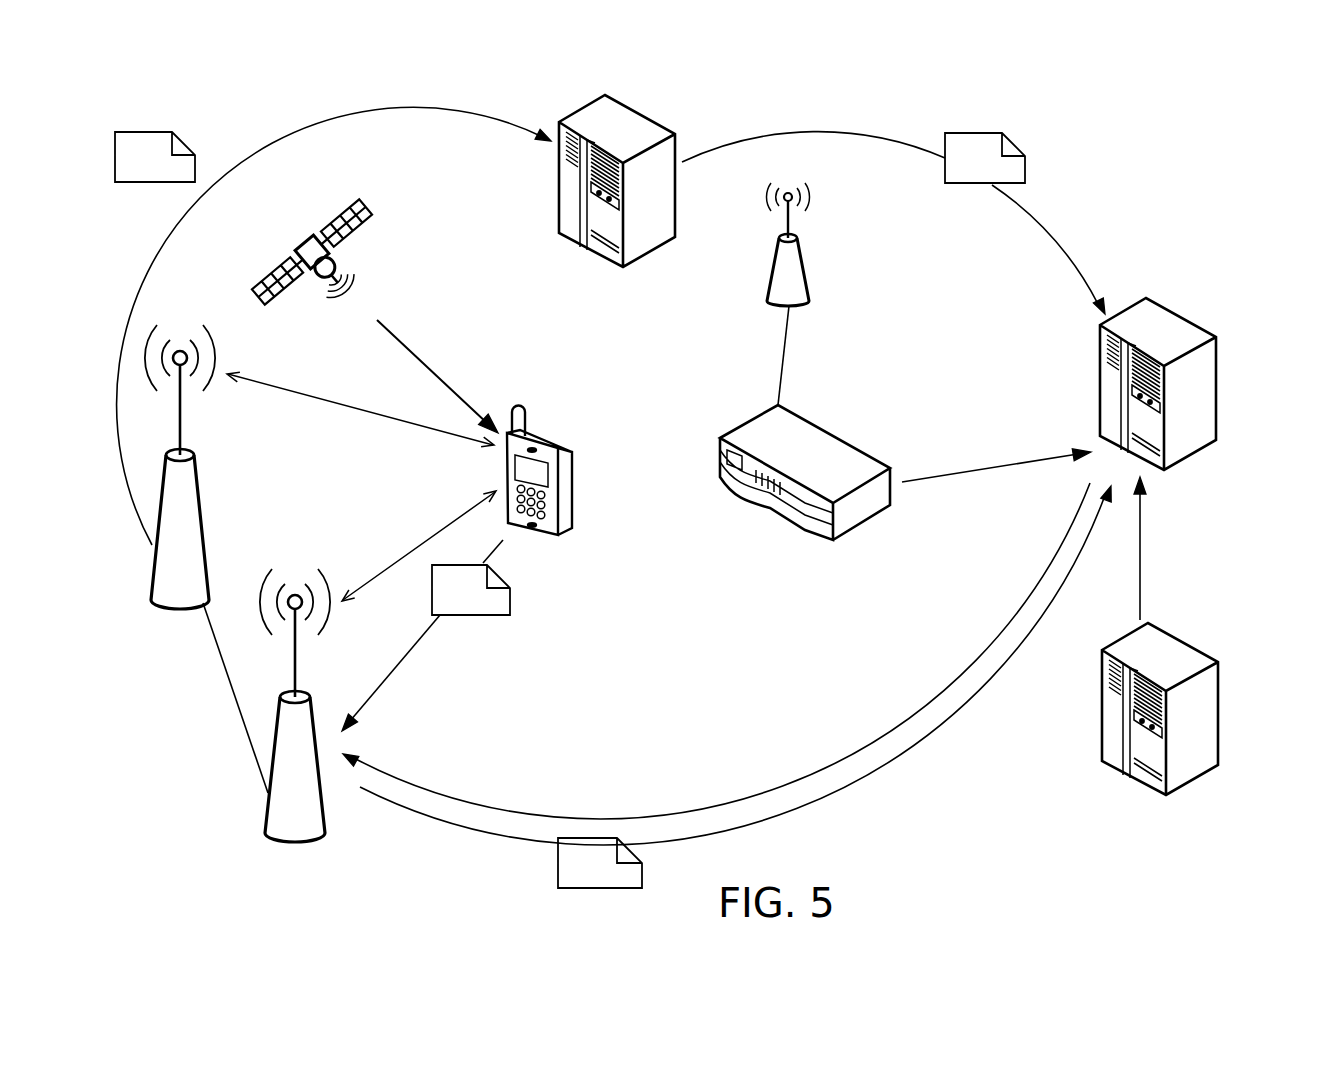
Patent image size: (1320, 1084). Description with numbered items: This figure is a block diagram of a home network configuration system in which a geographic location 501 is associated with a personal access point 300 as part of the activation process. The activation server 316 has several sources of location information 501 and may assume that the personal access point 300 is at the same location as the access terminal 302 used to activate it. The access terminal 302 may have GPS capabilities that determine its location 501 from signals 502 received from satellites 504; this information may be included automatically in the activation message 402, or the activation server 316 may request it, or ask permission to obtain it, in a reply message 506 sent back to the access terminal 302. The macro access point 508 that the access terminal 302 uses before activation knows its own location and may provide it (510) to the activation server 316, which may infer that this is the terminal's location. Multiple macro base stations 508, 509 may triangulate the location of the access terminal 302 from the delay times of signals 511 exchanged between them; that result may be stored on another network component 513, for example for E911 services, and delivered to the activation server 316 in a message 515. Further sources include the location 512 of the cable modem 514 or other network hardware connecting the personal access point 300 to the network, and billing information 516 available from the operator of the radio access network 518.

The personal access point 300 is at (808, 300).
The access terminal 302 is at (570, 532).
The activation server 316 is at (1205, 440).
The activation message 402 is at (410, 655).
The geographic location 501 is at (564, 903).
The signals 502 is at (452, 387).
The satellites 504 is at (343, 258).
The reply message 506 is at (743, 800).
The macro access point 508 is at (268, 830).
The macro base station 509 is at (173, 613).
The location provision 510 is at (790, 815).
The signals 511 is at (425, 543).
The location of the cable modem 512 is at (942, 476).
The network component 513 is at (643, 267).
The cable modem 514 is at (846, 542).
The message 515 is at (877, 137).
The billing information 516 is at (1141, 605).
The radio access network 518 is at (1188, 780).